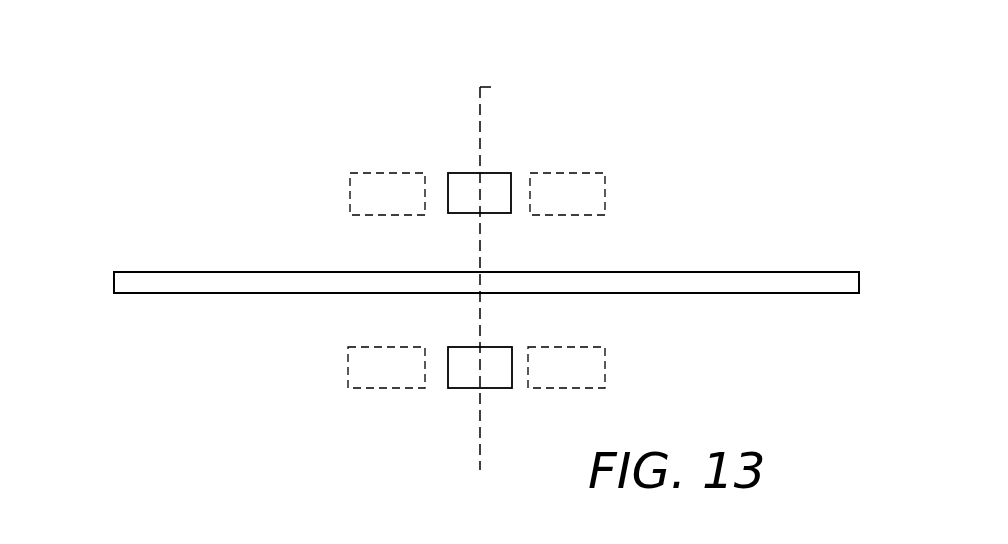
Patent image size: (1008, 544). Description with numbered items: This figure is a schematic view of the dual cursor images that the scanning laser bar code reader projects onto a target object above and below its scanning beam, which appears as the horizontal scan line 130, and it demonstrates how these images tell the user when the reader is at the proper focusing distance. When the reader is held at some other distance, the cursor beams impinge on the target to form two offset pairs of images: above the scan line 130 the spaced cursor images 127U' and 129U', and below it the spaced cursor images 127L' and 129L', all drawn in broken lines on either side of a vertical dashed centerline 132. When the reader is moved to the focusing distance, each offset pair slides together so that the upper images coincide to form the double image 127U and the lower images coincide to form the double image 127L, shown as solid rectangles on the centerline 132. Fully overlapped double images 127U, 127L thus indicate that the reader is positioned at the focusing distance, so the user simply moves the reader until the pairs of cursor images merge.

The axis / centerline 132 is at (497, 87).
The scan line 130 is at (788, 294).
The double image 127U is at (551, 154).
The cursor image 127U' is at (368, 166).
The cursor image 129U' is at (627, 202).
The double image 127L is at (548, 392).
The cursor image 127L' is at (336, 367).
The cursor image 129L' is at (617, 351).